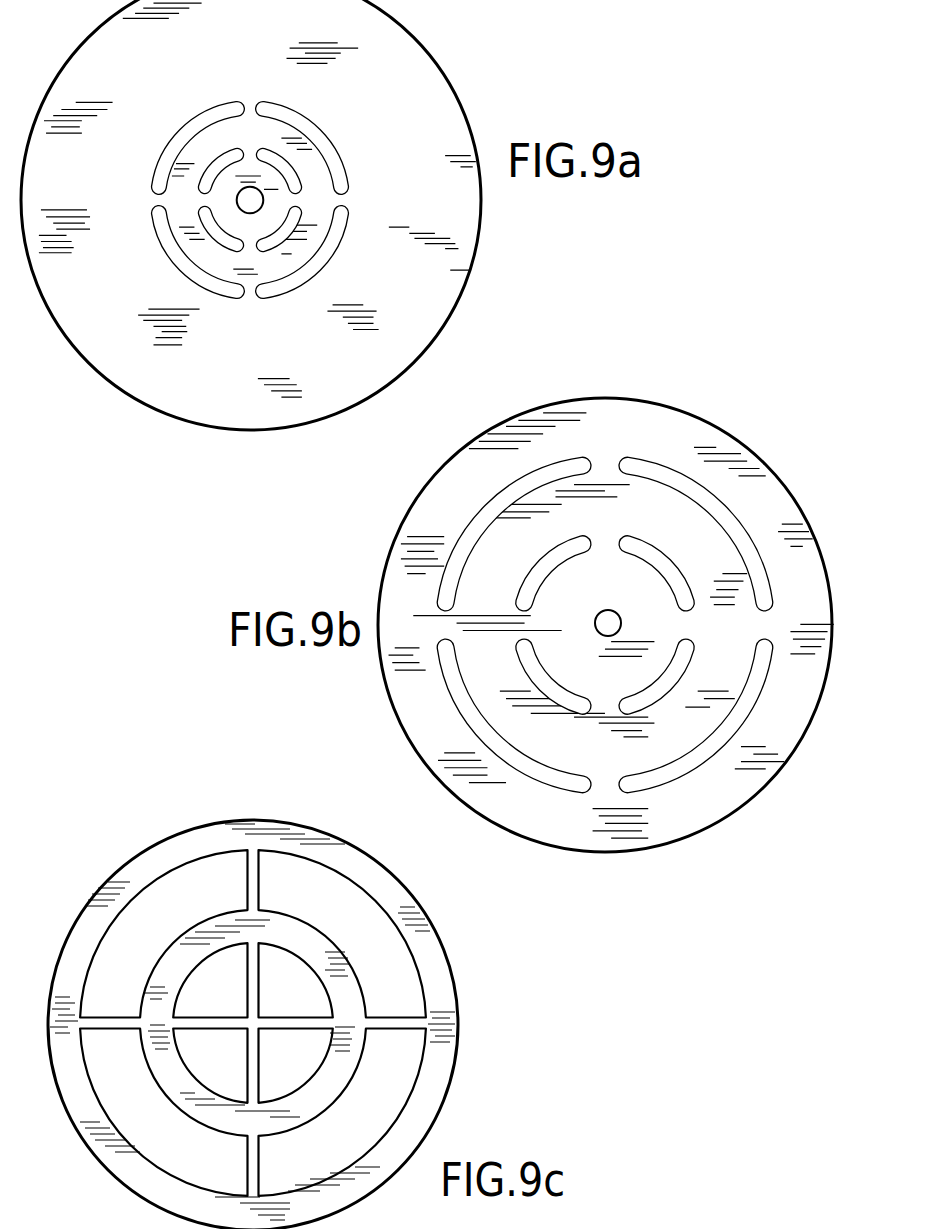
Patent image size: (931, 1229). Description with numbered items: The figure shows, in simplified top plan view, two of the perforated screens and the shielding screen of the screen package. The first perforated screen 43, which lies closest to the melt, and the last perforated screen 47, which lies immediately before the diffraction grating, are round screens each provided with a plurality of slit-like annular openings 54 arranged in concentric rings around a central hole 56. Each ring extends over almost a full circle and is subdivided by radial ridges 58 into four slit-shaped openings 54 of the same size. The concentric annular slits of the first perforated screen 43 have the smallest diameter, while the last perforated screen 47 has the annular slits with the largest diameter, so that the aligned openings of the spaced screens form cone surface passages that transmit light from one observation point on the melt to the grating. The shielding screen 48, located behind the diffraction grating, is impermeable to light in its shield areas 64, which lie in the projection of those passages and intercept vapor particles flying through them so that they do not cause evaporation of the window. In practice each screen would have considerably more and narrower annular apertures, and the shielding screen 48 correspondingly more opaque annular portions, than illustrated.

In FIG. 9A, the first perforated screen 43 is at (397, 48).
In FIG. 9B, the last perforated screen 47 is at (669, 423).
In FIG. 9C, the shielding screen 48 is at (458, 942).
In FIG. 9A, the annular openings 54 is at (343, 165).
In FIG. 9B, the annular openings 54 is at (693, 485).
In FIG. 9A, the central hole 56 is at (254, 210).
In FIG. 9B, the central hole 56 is at (609, 610).
In FIG. 9A, the radial ridges 58 is at (150, 203).
In FIG. 9B, the radial ridges 58 is at (609, 462).
In FIG. 9C, the shield areas 64 is at (257, 1017).